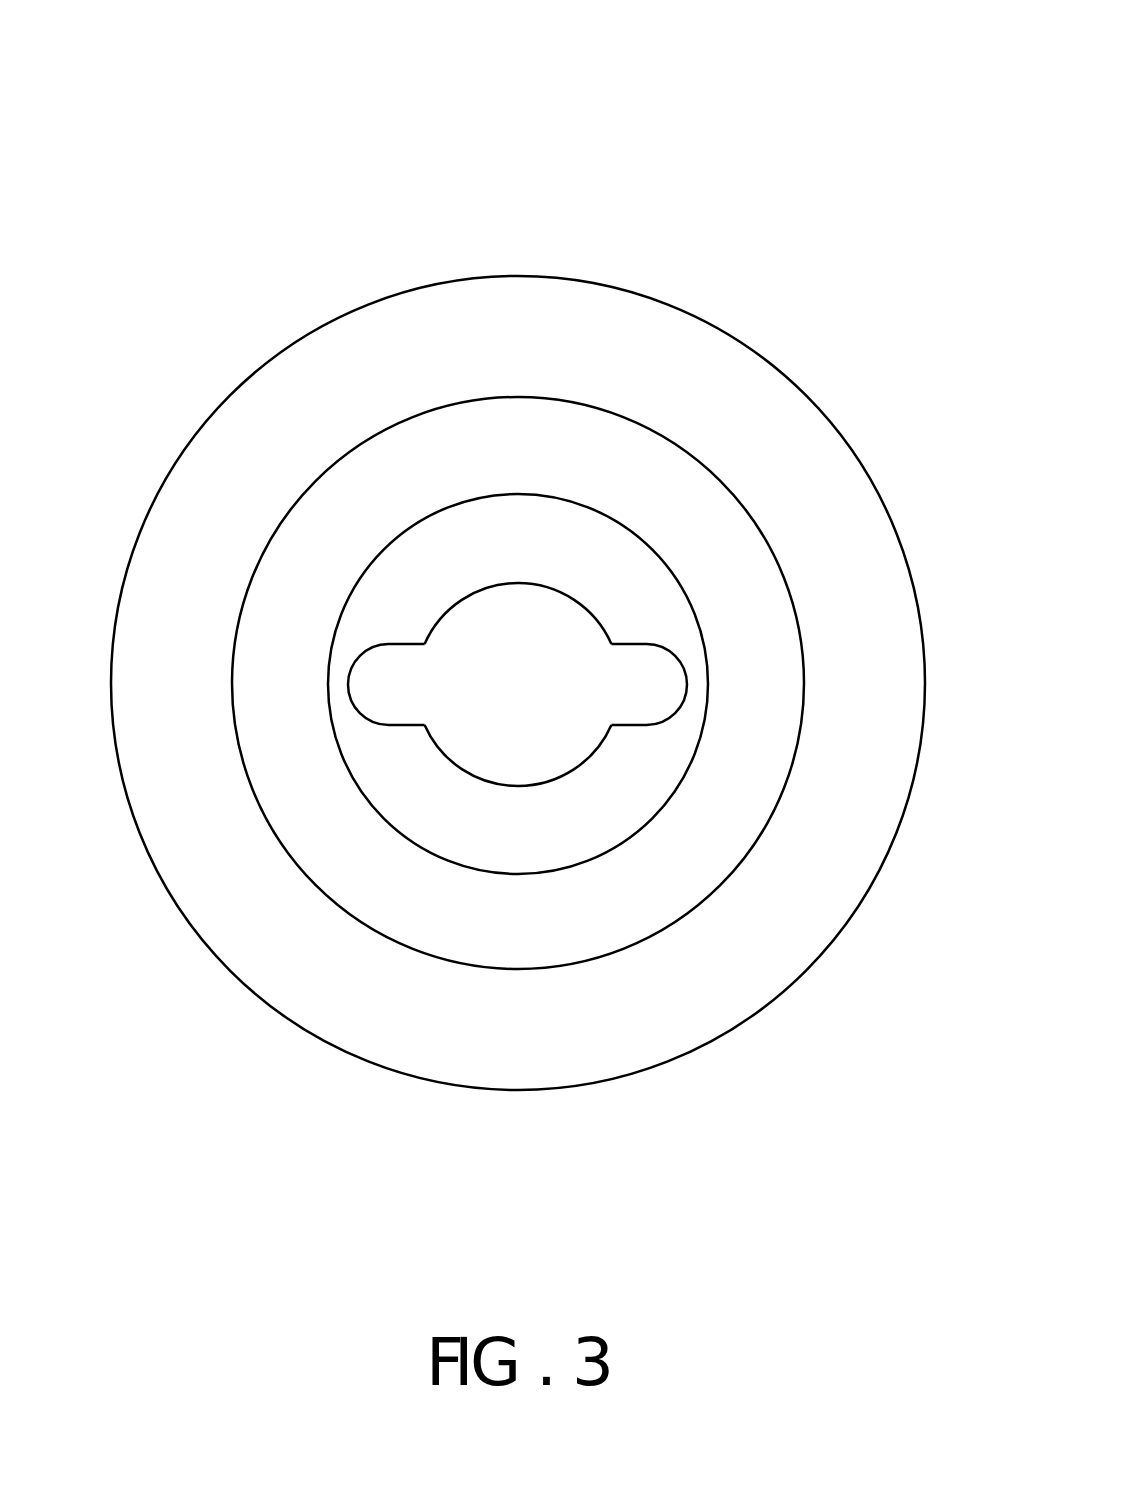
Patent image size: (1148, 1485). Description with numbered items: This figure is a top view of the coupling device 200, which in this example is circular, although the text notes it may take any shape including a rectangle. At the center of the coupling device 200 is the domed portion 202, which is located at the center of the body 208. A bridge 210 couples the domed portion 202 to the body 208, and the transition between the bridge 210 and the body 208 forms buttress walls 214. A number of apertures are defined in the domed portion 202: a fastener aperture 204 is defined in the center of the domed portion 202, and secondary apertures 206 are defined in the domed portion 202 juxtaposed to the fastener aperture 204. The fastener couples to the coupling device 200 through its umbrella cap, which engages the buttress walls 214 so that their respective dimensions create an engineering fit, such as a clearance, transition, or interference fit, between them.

The coupling device 200 is at (155, 40).
The domed portion 202 is at (518, 530).
The fastener aperture 204 is at (511, 730).
The secondary apertures 206 is at (385, 700).
The body 208 is at (387, 981).
The bridge 210 is at (740, 580).
The buttress walls 214 is at (367, 437).